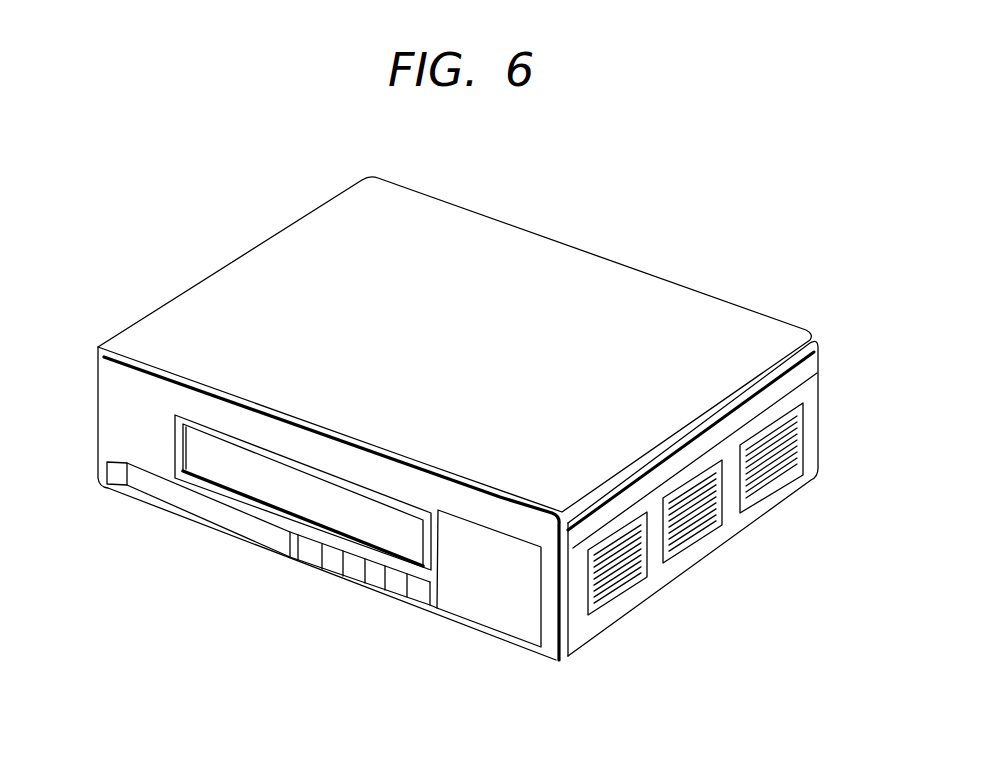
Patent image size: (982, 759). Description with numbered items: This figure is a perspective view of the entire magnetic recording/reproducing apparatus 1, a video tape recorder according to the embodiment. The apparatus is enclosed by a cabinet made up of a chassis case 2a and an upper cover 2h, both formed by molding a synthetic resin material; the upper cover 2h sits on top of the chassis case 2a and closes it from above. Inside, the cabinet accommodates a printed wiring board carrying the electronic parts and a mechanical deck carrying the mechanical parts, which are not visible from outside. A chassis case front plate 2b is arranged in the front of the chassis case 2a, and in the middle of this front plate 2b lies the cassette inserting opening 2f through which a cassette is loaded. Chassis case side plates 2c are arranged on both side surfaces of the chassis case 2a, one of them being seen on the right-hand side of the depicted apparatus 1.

The magnetic recording/reproducing apparatus 1 is at (479, 418).
The chassis case 2a is at (826, 378).
The chassis case front plate 2b is at (140, 427).
The chassis case side plates 2c is at (655, 548).
The cassette inserting opening 2f is at (280, 488).
The upper cover 2h is at (282, 267).